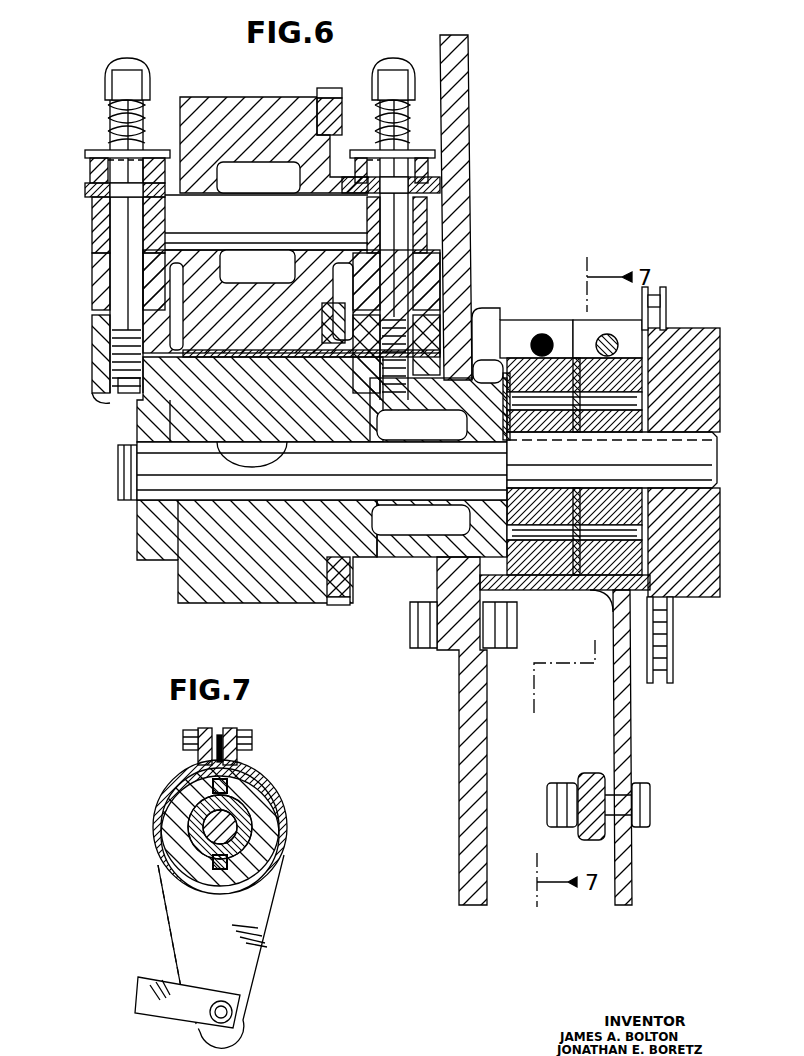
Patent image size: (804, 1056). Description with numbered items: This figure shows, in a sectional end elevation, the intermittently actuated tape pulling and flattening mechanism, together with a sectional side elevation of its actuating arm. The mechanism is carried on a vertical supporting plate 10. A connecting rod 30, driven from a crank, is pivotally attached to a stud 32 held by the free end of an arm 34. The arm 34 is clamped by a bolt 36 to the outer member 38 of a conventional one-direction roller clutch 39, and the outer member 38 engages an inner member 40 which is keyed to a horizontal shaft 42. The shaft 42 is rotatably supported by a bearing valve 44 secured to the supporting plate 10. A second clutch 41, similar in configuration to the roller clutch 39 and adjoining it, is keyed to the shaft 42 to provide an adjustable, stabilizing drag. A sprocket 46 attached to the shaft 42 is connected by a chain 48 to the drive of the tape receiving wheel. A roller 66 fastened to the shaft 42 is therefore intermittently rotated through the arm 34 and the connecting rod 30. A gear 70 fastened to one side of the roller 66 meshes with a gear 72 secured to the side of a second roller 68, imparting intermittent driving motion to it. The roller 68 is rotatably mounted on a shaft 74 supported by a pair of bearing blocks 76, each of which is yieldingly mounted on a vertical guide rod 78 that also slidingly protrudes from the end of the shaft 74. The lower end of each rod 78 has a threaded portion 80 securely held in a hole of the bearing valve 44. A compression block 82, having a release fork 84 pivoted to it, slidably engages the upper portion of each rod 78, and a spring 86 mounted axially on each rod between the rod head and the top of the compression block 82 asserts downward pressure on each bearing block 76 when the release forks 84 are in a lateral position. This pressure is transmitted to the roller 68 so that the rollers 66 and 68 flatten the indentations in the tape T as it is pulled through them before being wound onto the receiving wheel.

In FIG. 6, the vertical supporting plate 10 is at (458, 90).
In FIG. 6, the connecting rod 30 is at (590, 775).
In FIG. 7, the connecting rod 30 is at (165, 978).
In FIG. 6, the stud 32 is at (572, 780).
In FIG. 7, the stud 32 is at (236, 1016).
In FIG. 6, the arm 34 is at (623, 733).
In FIG. 7, the arm 34 is at (175, 775).
In FIG. 6, the bolt 36 is at (607, 334).
In FIG. 7, the bolt 36 is at (261, 742).
In FIG. 6, the outer member 38 is at (570, 356).
In FIG. 7, the outer member 38 is at (178, 803).
In FIG. 6, the one direction roller clutch 39 is at (638, 302).
In FIG. 7, the one direction roller clutch 39 is at (291, 782).
In FIG. 6, the inner member 40 is at (672, 358).
In FIG. 7, the inner member 40 is at (205, 843).
In FIG. 6, the clutch 41 is at (533, 311).
In FIG. 6, the shaft 42 is at (152, 455).
In FIG. 7, the shaft 42 is at (233, 830).
In FIG. 6, the bearing valve 44 is at (105, 375).
In FIG. 6, the sprocket 46 is at (652, 300).
In FIG. 6, the chain 48 is at (668, 305).
In FIG. 6, the roller 66 is at (278, 590).
In FIG. 6, the roller 68 is at (262, 104).
In FIG. 6, the gear 70 is at (352, 580).
In FIG. 6, the gear 72 is at (342, 100).
In FIG. 6, the shaft 74 is at (268, 210).
In FIG. 6, the bearing blocks 76 is at (92, 192).
In FIG. 6, the vertical guide rod 78 is at (133, 70).
In FIG. 6, the threaded portion 80 is at (126, 350).
In FIG. 6, the compression block 82 is at (93, 170).
In FIG. 6, the release fork 84 is at (88, 150).
In FIG. 6, the spring 86 is at (107, 118).
In FIG. 6, the tape T is at (246, 350).